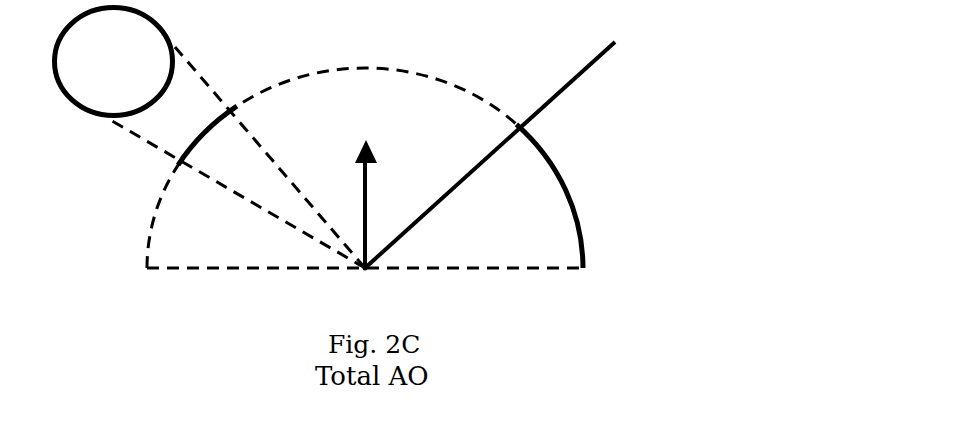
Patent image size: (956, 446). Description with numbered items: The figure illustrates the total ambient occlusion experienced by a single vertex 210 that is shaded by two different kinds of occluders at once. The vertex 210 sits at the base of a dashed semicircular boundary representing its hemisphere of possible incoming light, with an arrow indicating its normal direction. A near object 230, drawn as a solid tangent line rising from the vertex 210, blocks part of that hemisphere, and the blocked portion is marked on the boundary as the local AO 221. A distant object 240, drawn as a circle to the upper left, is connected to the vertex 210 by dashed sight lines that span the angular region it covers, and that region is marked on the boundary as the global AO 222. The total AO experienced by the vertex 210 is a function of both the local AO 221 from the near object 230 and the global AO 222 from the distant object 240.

The vertex 210 is at (398, 229).
The local AO 221 is at (572, 196).
The global AO 222 is at (201, 135).
The near object 230 is at (490, 155).
The distant object 240 is at (150, 62).